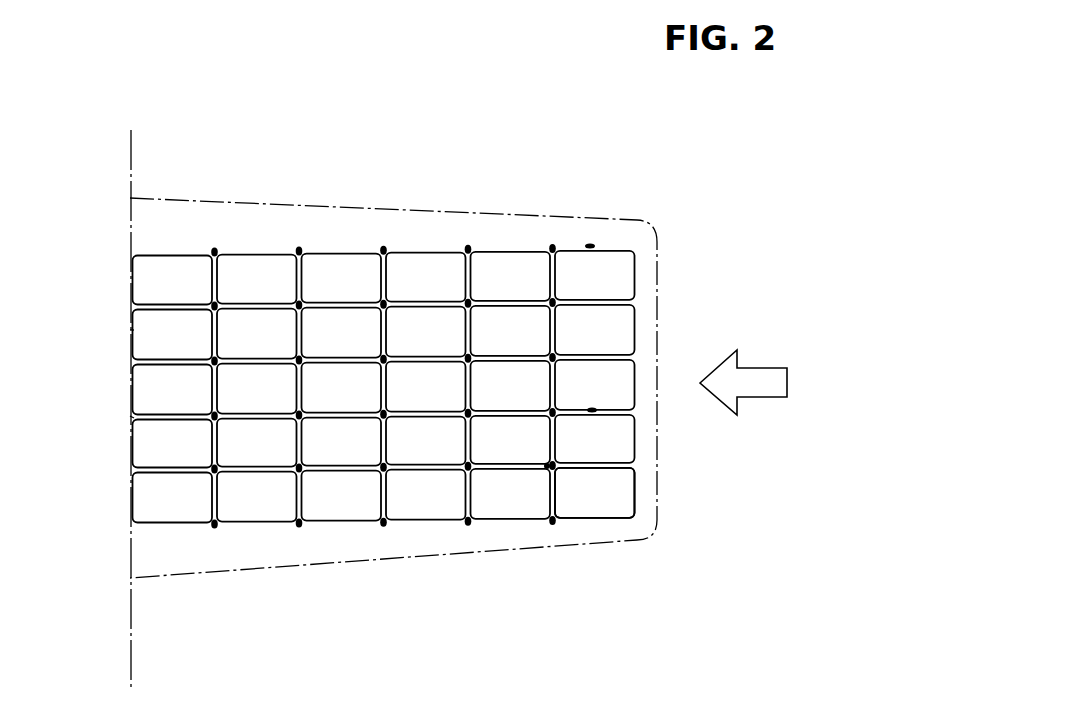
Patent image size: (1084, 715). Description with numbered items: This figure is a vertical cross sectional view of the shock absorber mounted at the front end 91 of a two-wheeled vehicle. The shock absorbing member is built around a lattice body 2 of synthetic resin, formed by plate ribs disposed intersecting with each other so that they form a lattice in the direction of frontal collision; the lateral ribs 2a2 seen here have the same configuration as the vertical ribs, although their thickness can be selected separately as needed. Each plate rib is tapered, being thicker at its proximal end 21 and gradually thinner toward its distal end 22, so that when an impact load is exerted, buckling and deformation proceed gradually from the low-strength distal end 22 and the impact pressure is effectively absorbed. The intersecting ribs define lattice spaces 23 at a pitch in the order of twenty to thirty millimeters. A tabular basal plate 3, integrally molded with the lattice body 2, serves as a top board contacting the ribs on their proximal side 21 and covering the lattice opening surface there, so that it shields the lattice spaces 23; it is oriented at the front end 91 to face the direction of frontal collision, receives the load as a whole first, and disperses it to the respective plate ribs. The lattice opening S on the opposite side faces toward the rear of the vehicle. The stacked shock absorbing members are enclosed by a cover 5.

The lattice body 2 is at (180, 250).
The cover 5 is at (352, 209).
The lateral rib 2a2 is at (590, 245).
The basal plate 3 is at (220, 498).
The lattice opening S is at (130, 335).
The distal end 22 is at (130, 418).
The proximal end 21 is at (547, 467).
The lattice space 23 is at (608, 495).
The front end 91 is at (132, 630).